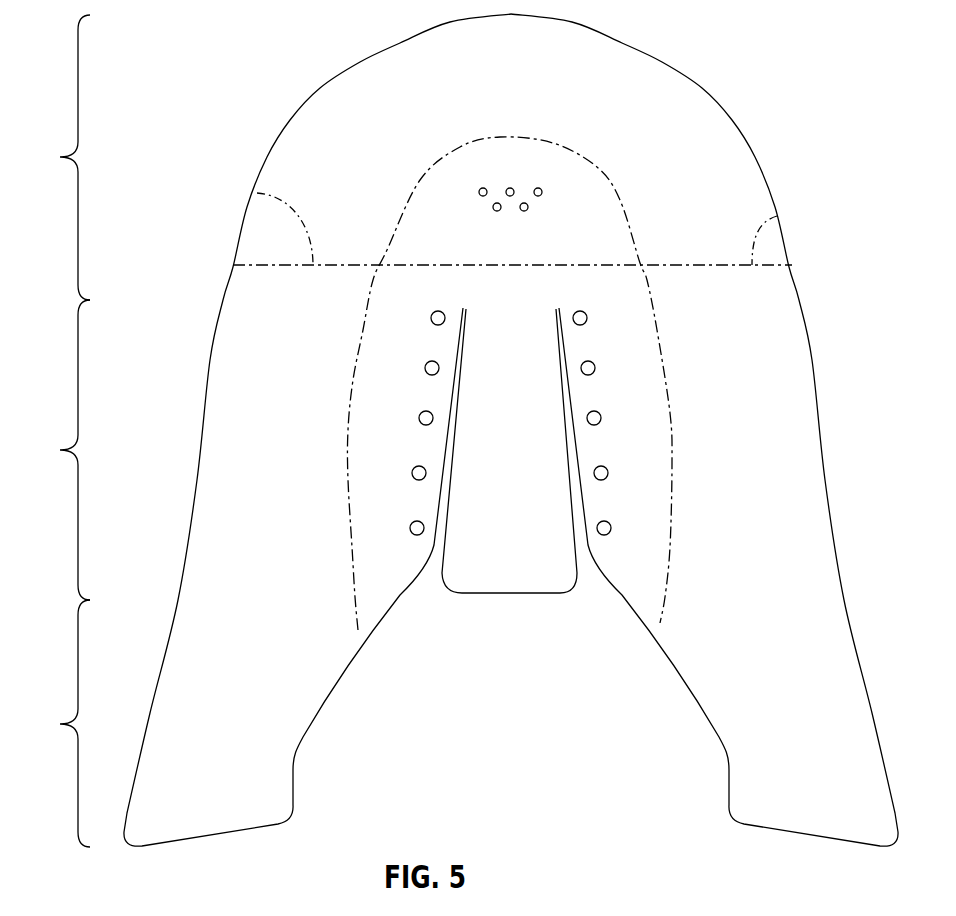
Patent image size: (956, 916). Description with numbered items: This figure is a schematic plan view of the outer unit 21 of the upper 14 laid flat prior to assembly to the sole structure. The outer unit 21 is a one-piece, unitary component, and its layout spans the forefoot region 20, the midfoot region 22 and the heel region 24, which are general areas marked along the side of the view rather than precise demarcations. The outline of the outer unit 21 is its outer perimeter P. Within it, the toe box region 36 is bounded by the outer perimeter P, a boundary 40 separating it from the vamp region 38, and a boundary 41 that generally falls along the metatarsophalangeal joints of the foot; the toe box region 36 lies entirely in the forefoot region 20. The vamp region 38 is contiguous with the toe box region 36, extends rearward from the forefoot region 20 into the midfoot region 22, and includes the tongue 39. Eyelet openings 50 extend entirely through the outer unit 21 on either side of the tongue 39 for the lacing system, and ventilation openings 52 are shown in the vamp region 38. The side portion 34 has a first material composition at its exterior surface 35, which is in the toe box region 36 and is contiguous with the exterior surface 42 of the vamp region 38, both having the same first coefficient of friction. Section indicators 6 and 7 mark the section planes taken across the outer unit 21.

The upper 14 is at (511, 430).
The outer unit 21 is at (790, 110).
The forefoot region 20 is at (58, 157).
The midfoot region 22 is at (58, 450).
The heel region 24 is at (58, 723).
The side portion 34 is at (268, 220).
The exterior surface 35 is at (326, 146).
The toe box region 36 is at (373, 117).
The vamp region 38 is at (533, 165).
The tongue 39 is at (510, 547).
The boundary 40 is at (487, 133).
The boundary 41 is at (255, 193).
The exterior surface 42 is at (550, 175).
The eyelet openings 50 is at (410, 528).
The ventilation openings 52 is at (483, 188).
The outer perimeter P is at (320, 88).
The section line 7- 7 is at (673, 252).
The section line 6- 6 is at (98, 740).